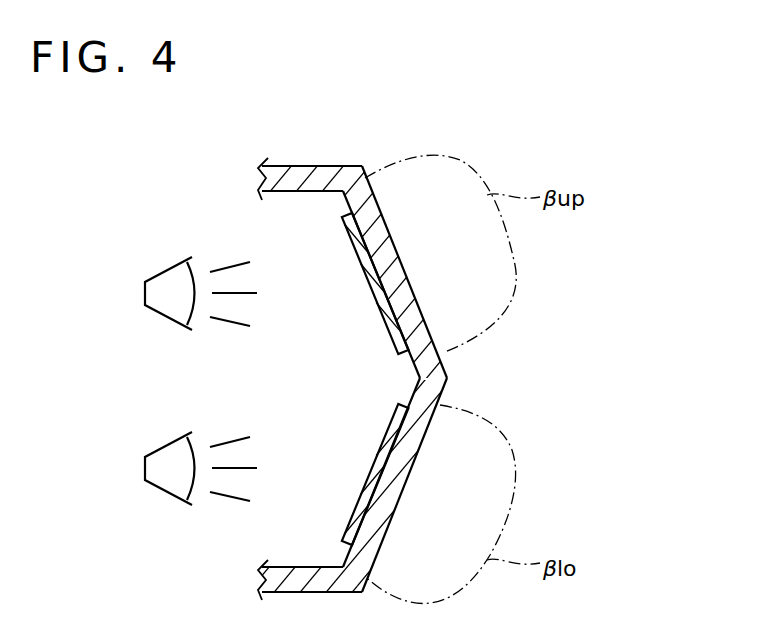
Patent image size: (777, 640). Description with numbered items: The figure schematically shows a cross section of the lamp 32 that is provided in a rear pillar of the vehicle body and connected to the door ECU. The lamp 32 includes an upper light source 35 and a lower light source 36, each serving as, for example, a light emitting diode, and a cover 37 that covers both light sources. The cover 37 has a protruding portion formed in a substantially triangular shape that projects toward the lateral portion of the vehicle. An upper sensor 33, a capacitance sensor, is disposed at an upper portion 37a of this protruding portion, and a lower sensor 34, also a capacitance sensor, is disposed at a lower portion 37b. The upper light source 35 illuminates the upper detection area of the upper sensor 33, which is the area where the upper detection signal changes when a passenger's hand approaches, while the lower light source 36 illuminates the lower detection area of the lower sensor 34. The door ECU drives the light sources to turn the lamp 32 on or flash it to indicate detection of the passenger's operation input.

The lamp 32 is at (643, 212).
The upper sensor 33 is at (363, 260).
The lower sensor 34 is at (368, 488).
The upper light source 35 is at (148, 293).
The lower light source 36 is at (148, 468).
The cover 37 is at (300, 165).
The upper portion of the protruding portion 37a is at (382, 242).
The lower portion of the protruding portion 37b is at (390, 503).